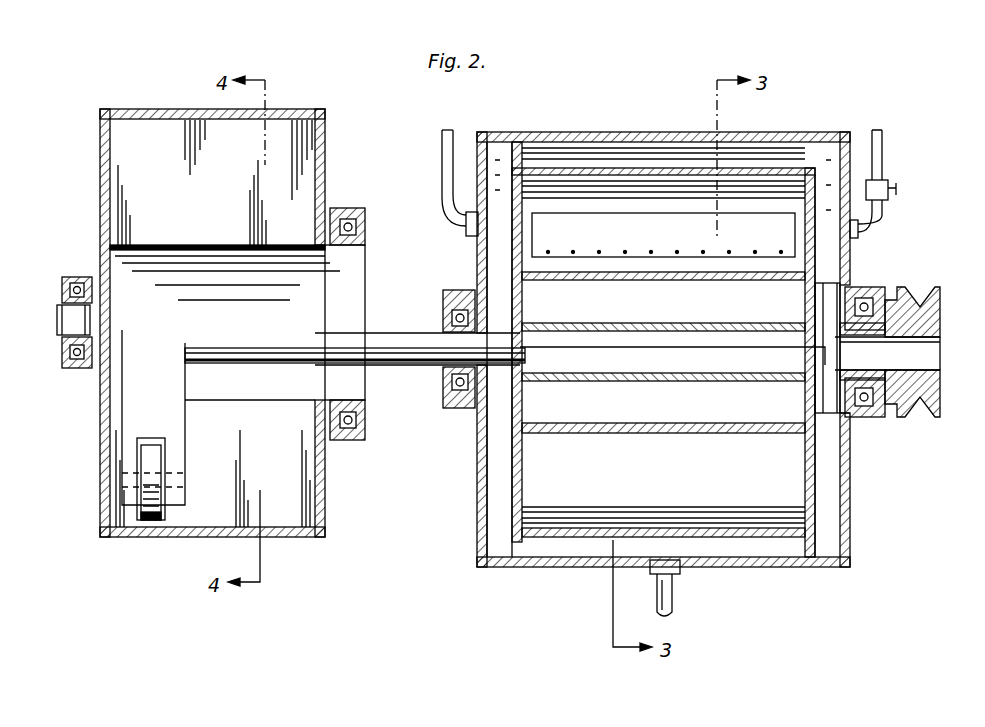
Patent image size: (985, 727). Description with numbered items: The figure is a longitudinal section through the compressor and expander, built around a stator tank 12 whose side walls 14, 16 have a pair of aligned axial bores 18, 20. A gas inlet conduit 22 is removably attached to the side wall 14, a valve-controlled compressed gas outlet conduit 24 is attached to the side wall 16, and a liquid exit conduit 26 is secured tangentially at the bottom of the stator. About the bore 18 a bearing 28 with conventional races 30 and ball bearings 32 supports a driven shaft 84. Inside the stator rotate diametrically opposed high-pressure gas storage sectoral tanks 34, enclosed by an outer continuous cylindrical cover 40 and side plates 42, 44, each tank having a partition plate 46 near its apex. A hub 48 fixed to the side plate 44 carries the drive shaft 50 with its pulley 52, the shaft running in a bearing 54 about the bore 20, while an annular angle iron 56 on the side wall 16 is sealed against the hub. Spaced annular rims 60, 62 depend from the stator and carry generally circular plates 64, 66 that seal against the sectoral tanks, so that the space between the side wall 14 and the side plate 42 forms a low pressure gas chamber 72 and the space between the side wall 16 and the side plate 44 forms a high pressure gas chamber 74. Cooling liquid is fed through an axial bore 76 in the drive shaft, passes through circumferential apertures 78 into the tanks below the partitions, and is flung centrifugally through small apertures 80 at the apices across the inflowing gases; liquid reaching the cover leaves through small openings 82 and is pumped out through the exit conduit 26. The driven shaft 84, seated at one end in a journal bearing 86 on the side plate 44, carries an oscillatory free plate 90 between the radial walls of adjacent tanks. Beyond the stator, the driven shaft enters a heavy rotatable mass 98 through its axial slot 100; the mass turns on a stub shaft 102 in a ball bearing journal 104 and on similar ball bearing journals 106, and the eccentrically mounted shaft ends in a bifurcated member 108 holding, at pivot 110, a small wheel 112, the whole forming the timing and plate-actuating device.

The stator tank 12 is at (594, 132).
The side wall 14 is at (476, 504).
The side wall 16 is at (848, 496).
The axial bore 18 is at (492, 322).
The axial bore 20 is at (848, 418).
The gas inlet conduit 22 is at (449, 130).
The compressed gas outlet conduit 24 is at (884, 150).
The liquid exit conduit 26 is at (678, 592).
The bearing 28 is at (446, 290).
The races 30 is at (443, 384).
The ball bearings 32 is at (452, 410).
The high-pressure gas storage sectoral tanks 34 is at (643, 200).
The outer continuous cylindrical cover 40 is at (746, 170).
The side plate 42 is at (531, 225).
The side plate 44 is at (804, 238).
The partition plate 46 is at (634, 271).
The hub 48 is at (851, 290).
The drive shaft 50 is at (905, 292).
The pulley 52 is at (934, 292).
The bearing 54 is at (888, 418).
The annular angle iron 56 is at (850, 282).
The annular rim 60 is at (498, 150).
The annular rim 62 is at (818, 145).
The circular plate 64 is at (511, 238).
The circular plate 66 is at (804, 202).
The low pressure gas chamber 72 is at (497, 550).
The high pressure gas chamber 74 is at (833, 545).
The axial bore 76 is at (930, 360).
The circumferential apertures 78 is at (805, 290).
The small apertures 80 is at (562, 324).
The small openings 82 is at (560, 168).
The driven shaft 84 is at (401, 340).
The journal bearing 86 is at (835, 348).
The oscillatory free plate 90 is at (646, 362).
The rotatable mass 98 is at (284, 128).
The axial slot 100 is at (115, 267).
The stub shaft 102 is at (57, 325).
The ball bearing journal 104 is at (66, 368).
The ball bearing journals 106 is at (350, 210).
The bifurcated member 108 is at (180, 433).
The pivot of small wheel 110 is at (180, 480).
The small wheel 112 is at (163, 512).